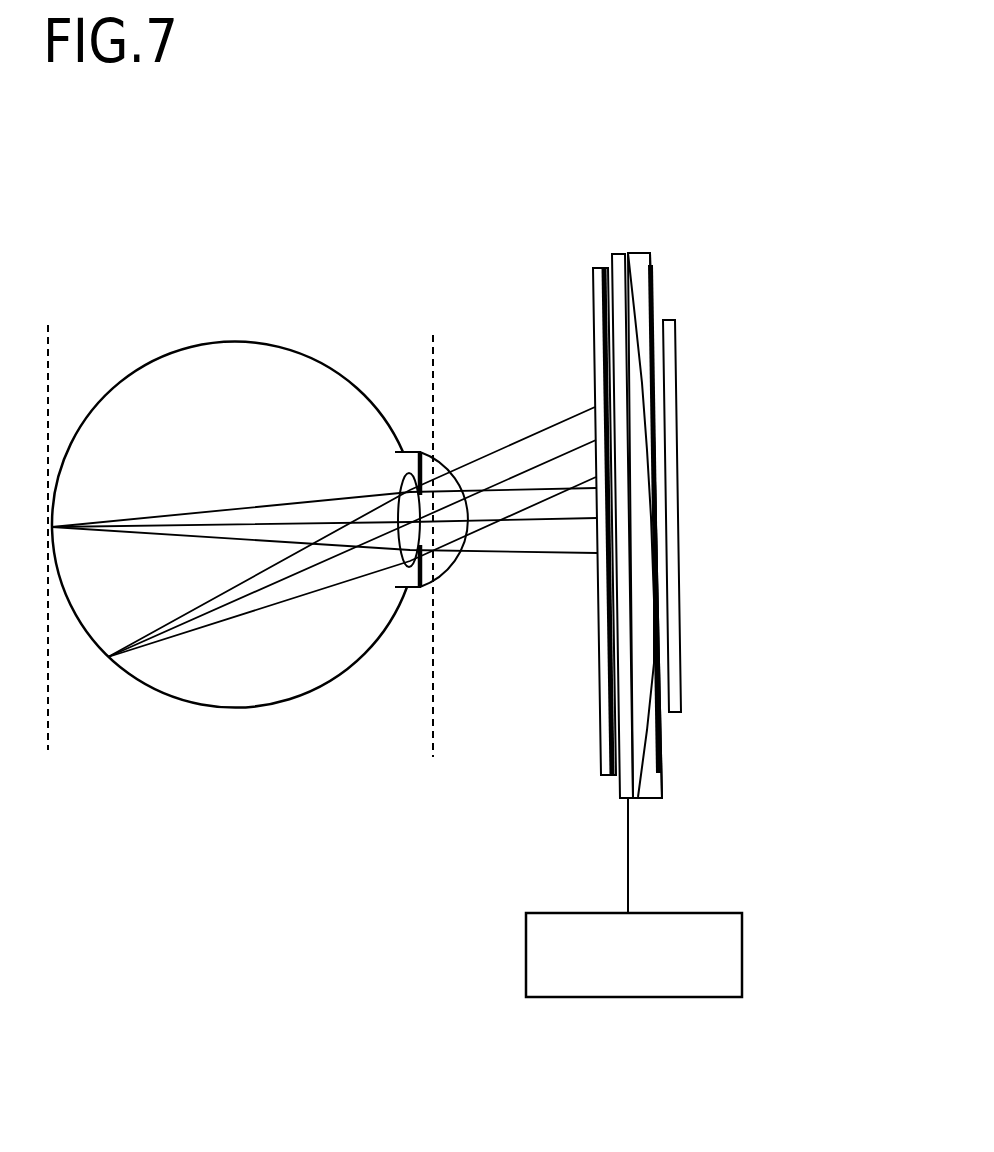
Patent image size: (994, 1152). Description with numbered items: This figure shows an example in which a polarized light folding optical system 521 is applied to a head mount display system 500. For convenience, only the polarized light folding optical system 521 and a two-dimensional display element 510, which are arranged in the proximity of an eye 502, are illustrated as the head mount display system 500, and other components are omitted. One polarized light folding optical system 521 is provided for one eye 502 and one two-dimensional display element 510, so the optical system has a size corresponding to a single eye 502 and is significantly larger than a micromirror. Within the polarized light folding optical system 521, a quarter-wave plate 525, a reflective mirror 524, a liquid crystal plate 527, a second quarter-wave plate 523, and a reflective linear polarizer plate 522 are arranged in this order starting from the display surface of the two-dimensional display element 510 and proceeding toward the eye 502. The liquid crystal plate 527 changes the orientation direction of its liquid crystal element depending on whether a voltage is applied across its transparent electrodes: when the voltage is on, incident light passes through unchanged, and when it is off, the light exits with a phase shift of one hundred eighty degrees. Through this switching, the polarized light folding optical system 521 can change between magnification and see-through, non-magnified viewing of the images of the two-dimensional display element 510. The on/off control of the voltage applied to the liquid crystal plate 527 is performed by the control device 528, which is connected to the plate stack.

The head mount display system 500 is at (733, 153).
The eye 502 is at (221, 343).
The two-dimensional display element 510 is at (678, 392).
The polarized light folding optical system 521 is at (657, 225).
The reflective linear polarizer plate 522 is at (600, 733).
The quarter-wave plate 523 is at (610, 775).
The reflective mirror 524 is at (662, 788).
The quarter-wave plate 525 is at (662, 738).
The liquid crystal plate 527 is at (627, 798).
The control device 528 is at (526, 932).